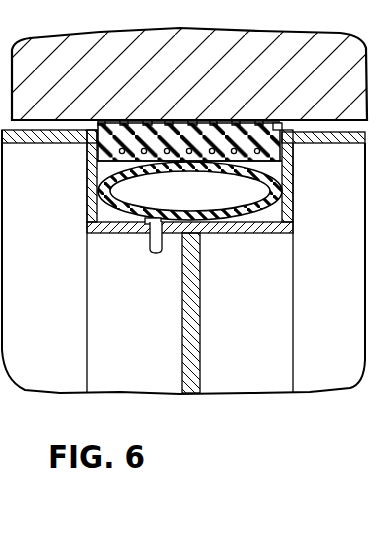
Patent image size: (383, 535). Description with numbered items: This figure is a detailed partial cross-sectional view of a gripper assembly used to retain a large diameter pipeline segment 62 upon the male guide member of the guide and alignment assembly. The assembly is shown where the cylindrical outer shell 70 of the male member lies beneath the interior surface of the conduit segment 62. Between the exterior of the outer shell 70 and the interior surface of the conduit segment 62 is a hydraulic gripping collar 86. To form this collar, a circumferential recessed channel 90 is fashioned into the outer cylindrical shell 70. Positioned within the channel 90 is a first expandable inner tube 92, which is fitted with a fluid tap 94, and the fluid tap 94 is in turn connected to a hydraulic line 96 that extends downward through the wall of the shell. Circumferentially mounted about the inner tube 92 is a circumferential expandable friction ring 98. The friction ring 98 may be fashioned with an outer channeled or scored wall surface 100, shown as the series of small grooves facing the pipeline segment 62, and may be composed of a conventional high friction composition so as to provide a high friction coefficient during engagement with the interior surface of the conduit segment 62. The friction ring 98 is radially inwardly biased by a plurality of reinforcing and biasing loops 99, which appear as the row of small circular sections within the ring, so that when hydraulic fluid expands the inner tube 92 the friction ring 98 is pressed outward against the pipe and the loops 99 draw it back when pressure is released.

The pipeline segment 62 is at (63, 46).
The cylindrical outer shell 70 is at (313, 143).
The hydraulic gripping collar 86 is at (97, 117).
The circumferential recessed channel 90 is at (97, 207).
The expandable inner tube 92 is at (277, 196).
The fluid tap 94 is at (149, 236).
The hydraulic line 96 is at (152, 252).
The circumferential expandable friction ring 98 is at (269, 121).
The reinforcing and biasing loops 99 is at (103, 150).
The channeled or scored wall surface 100 is at (168, 122).